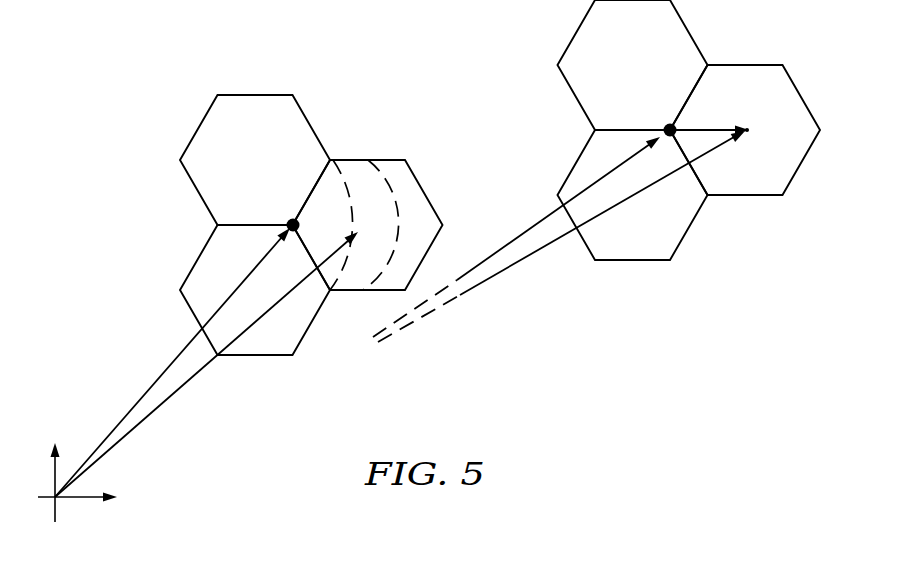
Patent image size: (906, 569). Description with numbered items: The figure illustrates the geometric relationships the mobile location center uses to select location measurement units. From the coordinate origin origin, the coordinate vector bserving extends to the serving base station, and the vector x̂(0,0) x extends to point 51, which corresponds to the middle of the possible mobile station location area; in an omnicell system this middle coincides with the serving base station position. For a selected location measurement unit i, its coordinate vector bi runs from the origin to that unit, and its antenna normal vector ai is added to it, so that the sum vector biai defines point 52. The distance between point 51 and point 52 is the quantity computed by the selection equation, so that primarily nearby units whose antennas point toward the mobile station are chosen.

The point 51 is at (390, 220).
The point 52 is at (755, 122).
The antenna normal vector ai is at (713, 128).
The coordinate vector bi is at (477, 267).
The vector (b_i + a_i) biai is at (528, 260).
The serving base station coordinate vector bserving is at (137, 402).
The middle of the MS location area x̂(0,0) x is at (182, 388).
The element origin is at (77, 485).